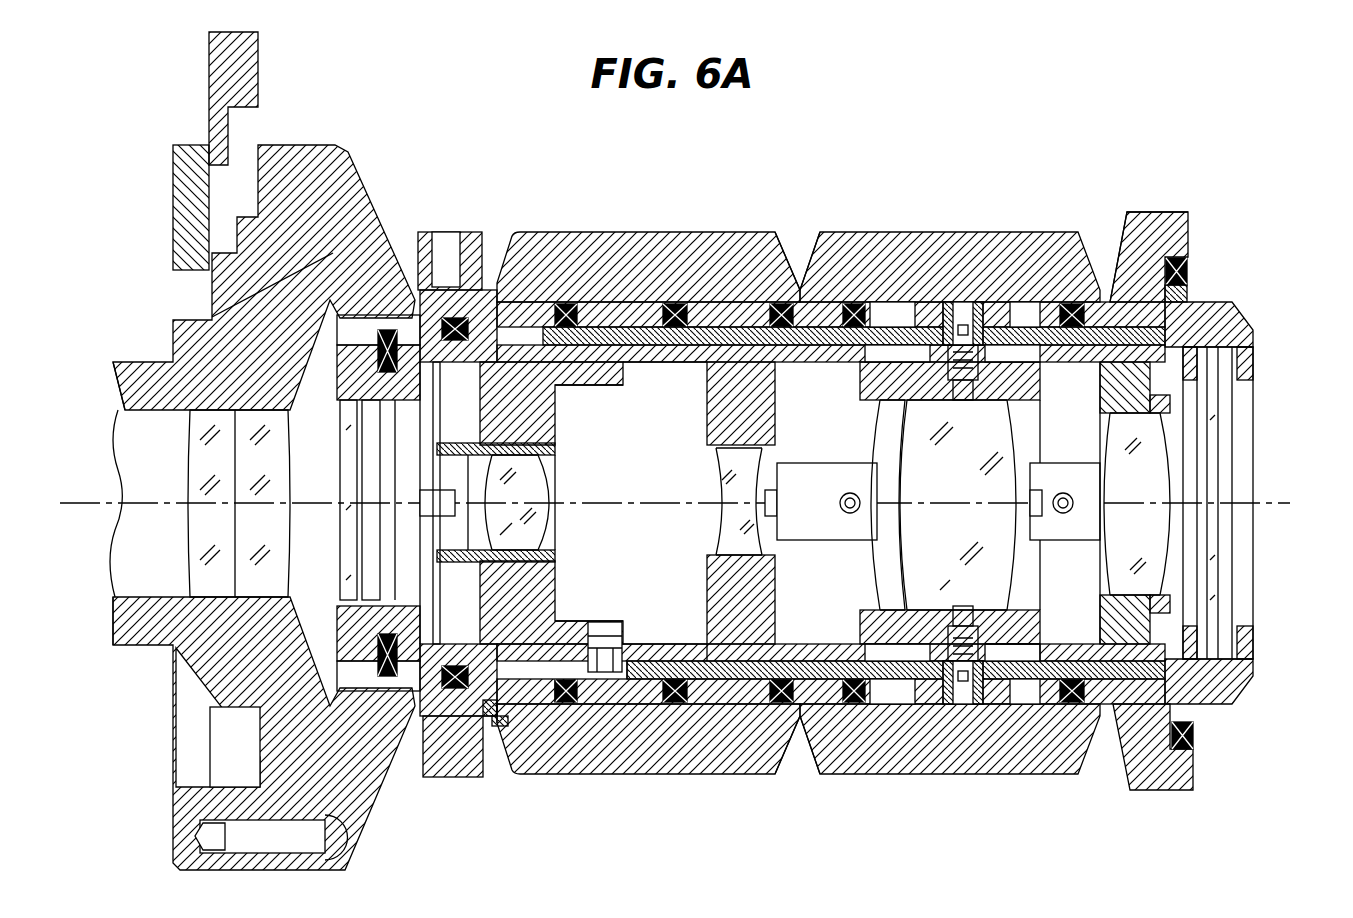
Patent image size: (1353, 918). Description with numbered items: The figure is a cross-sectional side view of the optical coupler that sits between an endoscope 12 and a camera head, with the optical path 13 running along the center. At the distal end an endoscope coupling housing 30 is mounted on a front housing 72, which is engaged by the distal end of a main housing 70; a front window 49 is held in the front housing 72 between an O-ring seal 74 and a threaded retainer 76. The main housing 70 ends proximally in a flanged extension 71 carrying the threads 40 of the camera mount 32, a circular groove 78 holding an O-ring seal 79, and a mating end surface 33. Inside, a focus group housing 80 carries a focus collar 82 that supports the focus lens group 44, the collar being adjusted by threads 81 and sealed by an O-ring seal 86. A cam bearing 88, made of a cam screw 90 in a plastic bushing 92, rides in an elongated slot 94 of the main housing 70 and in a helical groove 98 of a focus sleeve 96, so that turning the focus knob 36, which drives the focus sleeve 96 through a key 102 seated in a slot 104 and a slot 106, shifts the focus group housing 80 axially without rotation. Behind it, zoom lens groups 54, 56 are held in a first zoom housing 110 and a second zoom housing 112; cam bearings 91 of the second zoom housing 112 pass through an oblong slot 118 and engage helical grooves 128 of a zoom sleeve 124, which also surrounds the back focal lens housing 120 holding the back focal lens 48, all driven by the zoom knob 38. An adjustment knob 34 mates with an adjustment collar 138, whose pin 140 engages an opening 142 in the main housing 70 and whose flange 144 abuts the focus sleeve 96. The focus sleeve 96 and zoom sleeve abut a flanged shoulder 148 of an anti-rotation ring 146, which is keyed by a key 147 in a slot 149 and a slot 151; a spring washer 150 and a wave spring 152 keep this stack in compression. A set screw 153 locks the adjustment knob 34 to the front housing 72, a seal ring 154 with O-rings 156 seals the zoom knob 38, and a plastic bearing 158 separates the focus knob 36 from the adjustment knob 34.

The endoscope 12 is at (145, 384).
The objective lens 13 is at (92, 518).
The endoscope coupling housing 30 is at (343, 162).
The camera mount 32 is at (1153, 196).
The mating end surface 33 is at (1200, 773).
The adjustment knob 34 is at (443, 765).
The focus knob 36 is at (518, 248).
The zoom knob 38 is at (800, 258).
The threads 40 is at (1240, 703).
The focus lens group 44 is at (560, 527).
The back focal lens 48 is at (1105, 560).
The front window 49 is at (365, 495).
The zoom lens group 54 is at (781, 547).
The zoom lens group 56 is at (880, 547).
The main housing 70 is at (447, 645).
The flanged extension 71 is at (1240, 318).
The front housing 72 is at (342, 603).
The O-ring seal 74 is at (340, 587).
The threaded retainer 76 is at (420, 432).
The circular groove 78 is at (1190, 296).
The O-ring seal 79 is at (1190, 270).
The focus group housing 80 is at (553, 418).
The threads 81 is at (562, 455).
The focus collar 82 is at (553, 450).
The O-ring seal 86 is at (445, 572).
The cam bearing 88 is at (604, 618).
The cam screw 90 is at (612, 630).
The cam bearing 91 is at (958, 320).
The plastic bushing 92 is at (642, 705).
The elongated slot 94 is at (512, 722).
The focus sleeve 96 is at (643, 378).
The helical grooves 98 is at (575, 705).
The key 102 is at (672, 350).
The slot 104 is at (718, 325).
The slot 106 is at (650, 362).
The first zoom housing 110 is at (707, 448).
The second zoom housing 112 is at (855, 400).
The oblong slot 118 is at (1047, 690).
The back focal lens housing 120 is at (1096, 385).
The zoom sleeve 124 is at (838, 366).
The helical grooves 128 is at (982, 662).
The adjustment collar 138 is at (590, 315).
The pin 140 is at (545, 318).
The opening 142 is at (478, 370).
The flange 144 is at (572, 322).
The anti-rotation ring 146 is at (780, 706).
The key 147 is at (758, 305).
The flanged shoulder 148 is at (716, 705).
The slot 149 is at (730, 330).
The spring washer 150 is at (1090, 320).
The slot 151 is at (805, 300).
The wave spring 152 is at (1122, 300).
The set screw 153 is at (438, 240).
The seal ring 154 is at (1180, 738).
The O-rings 156 is at (812, 706).
The plastic bearing 158 is at (497, 732).